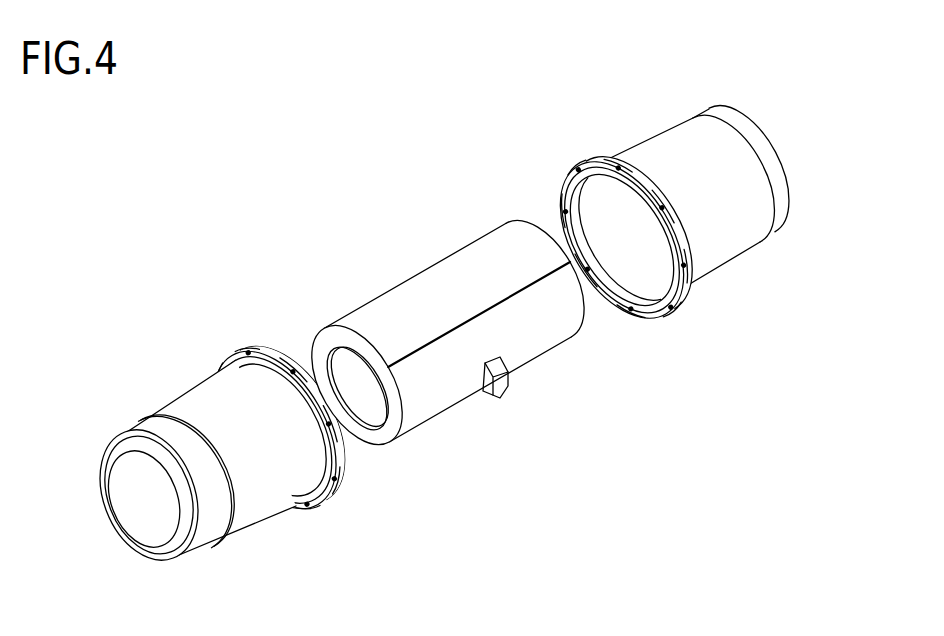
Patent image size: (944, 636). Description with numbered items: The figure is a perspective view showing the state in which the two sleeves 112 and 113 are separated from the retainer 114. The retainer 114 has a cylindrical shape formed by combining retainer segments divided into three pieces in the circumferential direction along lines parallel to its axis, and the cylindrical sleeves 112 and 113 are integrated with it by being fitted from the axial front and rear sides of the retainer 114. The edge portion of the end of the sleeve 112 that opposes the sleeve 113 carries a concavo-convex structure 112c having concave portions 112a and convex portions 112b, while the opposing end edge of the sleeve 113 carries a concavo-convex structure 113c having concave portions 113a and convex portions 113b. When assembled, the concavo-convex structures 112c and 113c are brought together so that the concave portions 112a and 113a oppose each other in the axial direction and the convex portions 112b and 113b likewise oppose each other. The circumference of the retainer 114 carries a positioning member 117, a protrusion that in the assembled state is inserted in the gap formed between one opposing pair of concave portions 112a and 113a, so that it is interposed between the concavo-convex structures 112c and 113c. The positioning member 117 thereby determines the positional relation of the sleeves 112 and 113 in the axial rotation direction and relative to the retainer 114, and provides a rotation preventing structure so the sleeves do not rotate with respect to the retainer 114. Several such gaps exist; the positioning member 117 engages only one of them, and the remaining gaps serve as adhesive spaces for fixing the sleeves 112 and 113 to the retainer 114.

The sleeve 112 is at (259, 399).
The concave portions 112a is at (310, 376).
The convex portions 112b is at (347, 281).
The concavo-convex structure 112c is at (293, 376).
The sleeve 113 is at (649, 271).
The concave portions 113a is at (625, 312).
The convex portions 113b is at (662, 313).
The concavo-convex structure 113c is at (630, 293).
The retainer 114 is at (448, 326).
The positioning member 117 is at (509, 380).